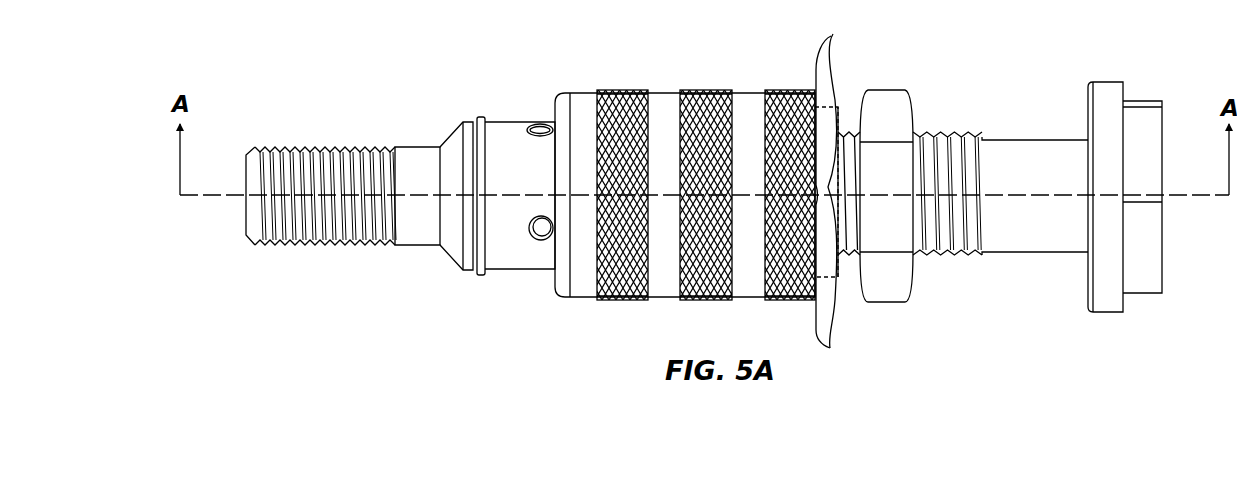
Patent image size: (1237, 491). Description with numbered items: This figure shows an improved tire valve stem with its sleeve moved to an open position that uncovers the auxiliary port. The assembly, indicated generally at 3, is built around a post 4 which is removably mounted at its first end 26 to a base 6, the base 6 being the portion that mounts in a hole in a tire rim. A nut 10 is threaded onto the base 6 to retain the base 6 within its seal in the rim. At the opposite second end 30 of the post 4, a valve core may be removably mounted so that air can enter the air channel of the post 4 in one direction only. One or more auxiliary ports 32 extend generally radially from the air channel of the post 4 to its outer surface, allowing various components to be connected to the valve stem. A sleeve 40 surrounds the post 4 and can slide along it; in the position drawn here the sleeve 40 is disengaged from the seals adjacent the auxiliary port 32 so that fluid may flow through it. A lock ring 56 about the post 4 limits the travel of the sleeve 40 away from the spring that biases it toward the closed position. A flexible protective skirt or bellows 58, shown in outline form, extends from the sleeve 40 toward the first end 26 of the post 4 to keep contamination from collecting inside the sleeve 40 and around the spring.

The sensor assembly 3 is at (320, 62).
The second end 30 is at (288, 142).
The post 4 is at (447, 137).
The lock ring 56 is at (481, 116).
The auxiliary port 32 is at (540, 123).
The sleeve 40 is at (585, 92).
The bellows 58 is at (831, 46).
The first end 26 is at (840, 118).
The nut 10 is at (903, 95).
The base 6 is at (1143, 100).